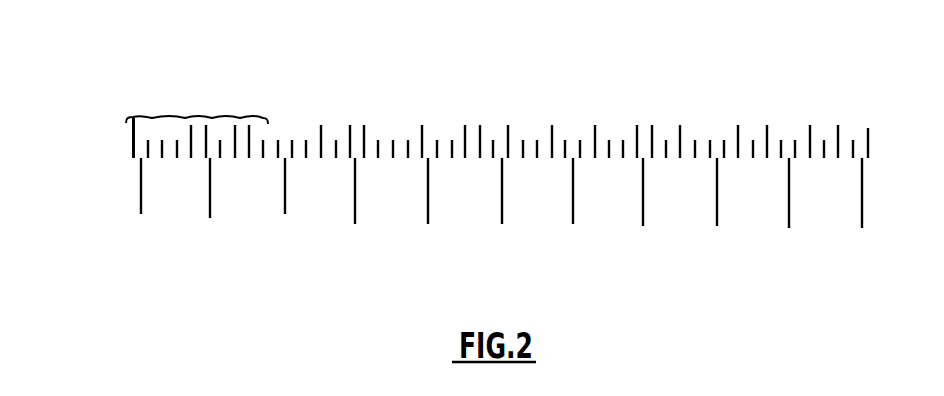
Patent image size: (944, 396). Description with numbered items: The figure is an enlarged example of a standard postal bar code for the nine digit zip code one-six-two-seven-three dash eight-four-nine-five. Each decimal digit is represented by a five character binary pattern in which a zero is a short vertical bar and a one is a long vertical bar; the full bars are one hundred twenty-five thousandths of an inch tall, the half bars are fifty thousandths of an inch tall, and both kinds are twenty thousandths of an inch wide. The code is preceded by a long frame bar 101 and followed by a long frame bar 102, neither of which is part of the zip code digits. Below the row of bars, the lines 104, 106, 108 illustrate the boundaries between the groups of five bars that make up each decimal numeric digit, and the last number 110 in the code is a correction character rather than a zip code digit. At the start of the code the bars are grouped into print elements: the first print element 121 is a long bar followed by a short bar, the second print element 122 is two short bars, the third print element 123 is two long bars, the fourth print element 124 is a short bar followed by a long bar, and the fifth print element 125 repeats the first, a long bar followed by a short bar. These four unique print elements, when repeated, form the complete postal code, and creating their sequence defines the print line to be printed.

The long frame bar 101 is at (133, 138).
The long frame bar 102 is at (868, 143).
The boundary line 104 is at (141, 213).
The boundary line 106 is at (210, 218).
The boundary line 108 is at (285, 213).
The correction character 110 is at (827, 221).
The first print element 121 is at (140, 116).
The second print element 122 is at (167, 116).
The third print element 123 is at (192, 116).
The fourth print element 124 is at (240, 116).
The fifth print element 125 is at (254, 117).